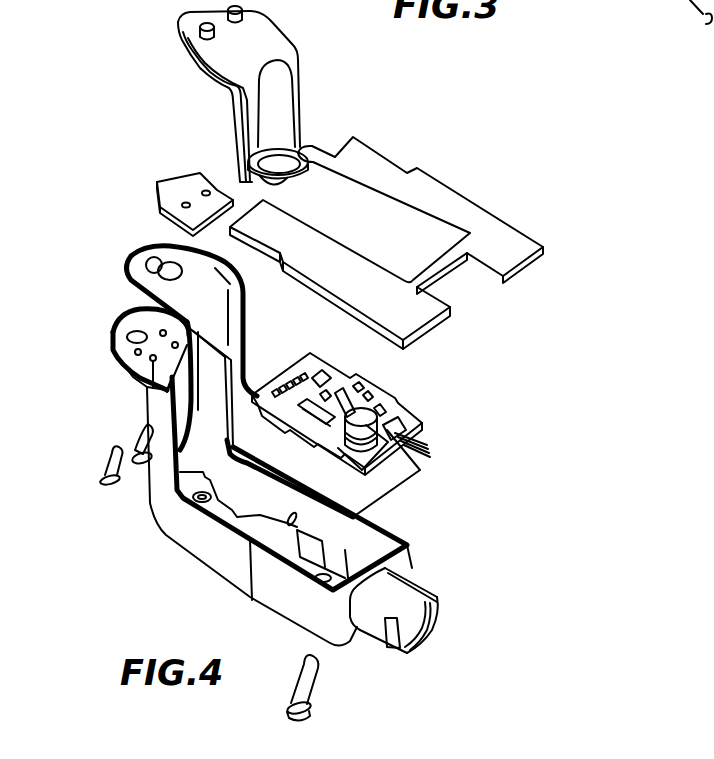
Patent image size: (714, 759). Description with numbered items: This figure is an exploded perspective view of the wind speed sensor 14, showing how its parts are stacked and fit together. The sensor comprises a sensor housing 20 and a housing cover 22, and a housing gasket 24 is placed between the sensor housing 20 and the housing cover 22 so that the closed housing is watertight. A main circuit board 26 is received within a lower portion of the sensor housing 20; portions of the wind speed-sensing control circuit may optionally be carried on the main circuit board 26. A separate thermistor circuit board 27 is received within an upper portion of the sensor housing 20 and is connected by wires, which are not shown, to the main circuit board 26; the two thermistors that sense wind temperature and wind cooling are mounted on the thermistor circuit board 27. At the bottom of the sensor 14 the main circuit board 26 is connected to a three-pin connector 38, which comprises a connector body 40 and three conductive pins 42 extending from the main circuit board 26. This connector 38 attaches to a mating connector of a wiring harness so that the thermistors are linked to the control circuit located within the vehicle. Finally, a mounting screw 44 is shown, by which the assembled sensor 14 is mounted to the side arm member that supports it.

The wind speed sensor 14 is at (114, 78).
The sensor housing 20 is at (202, 565).
The housing cover 22 is at (370, 140).
The housing gasket 24 is at (150, 260).
The main circuit board 26 is at (400, 405).
The thermistor circuit board 27 is at (170, 172).
The three-pin connector 38 is at (440, 591).
The connector body 40 is at (425, 642).
The conductive pins 42 is at (428, 446).
The mounting screw 44 is at (322, 686).